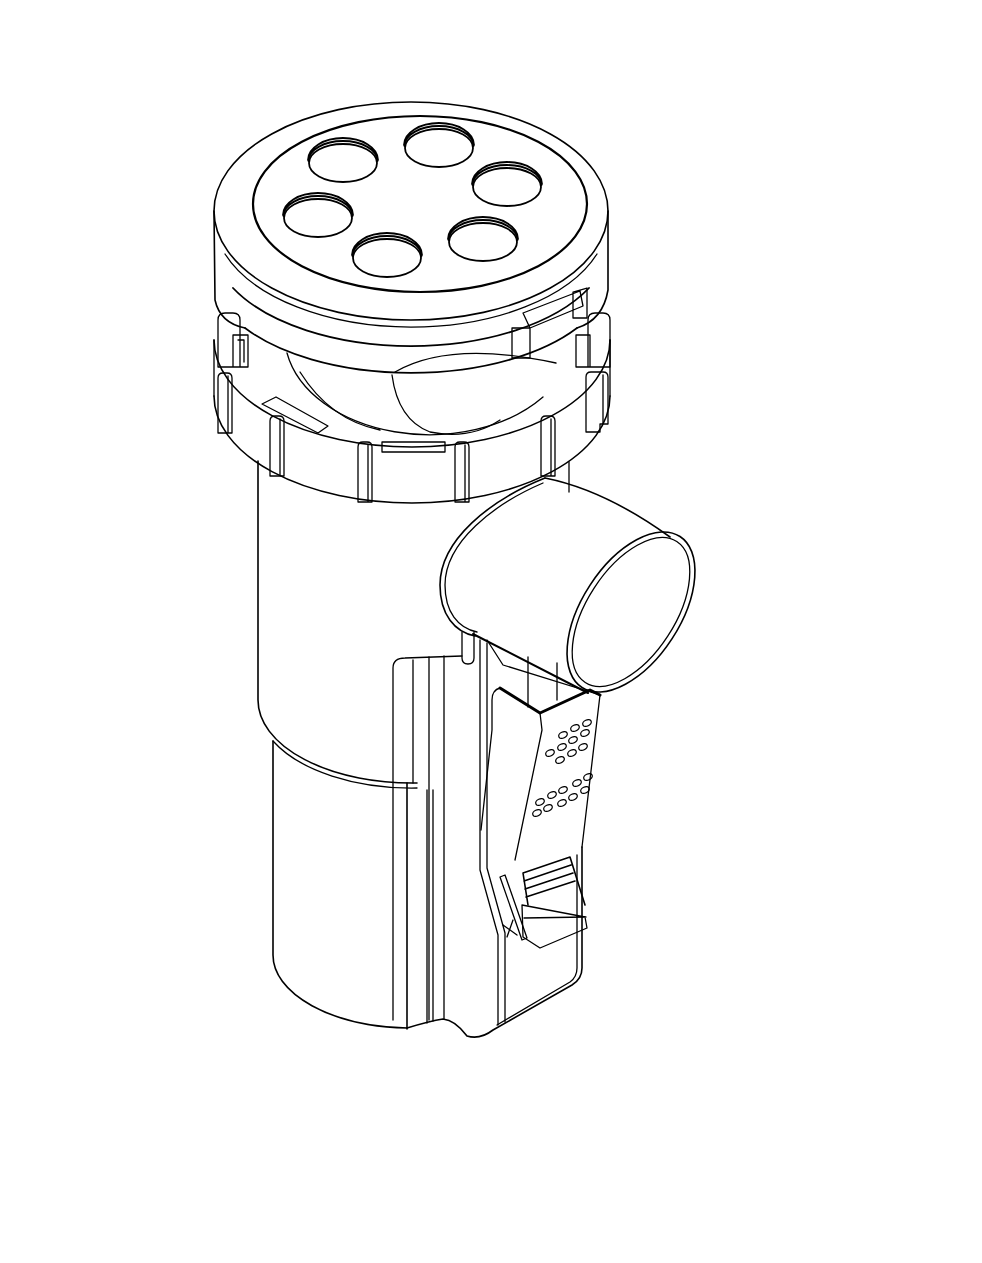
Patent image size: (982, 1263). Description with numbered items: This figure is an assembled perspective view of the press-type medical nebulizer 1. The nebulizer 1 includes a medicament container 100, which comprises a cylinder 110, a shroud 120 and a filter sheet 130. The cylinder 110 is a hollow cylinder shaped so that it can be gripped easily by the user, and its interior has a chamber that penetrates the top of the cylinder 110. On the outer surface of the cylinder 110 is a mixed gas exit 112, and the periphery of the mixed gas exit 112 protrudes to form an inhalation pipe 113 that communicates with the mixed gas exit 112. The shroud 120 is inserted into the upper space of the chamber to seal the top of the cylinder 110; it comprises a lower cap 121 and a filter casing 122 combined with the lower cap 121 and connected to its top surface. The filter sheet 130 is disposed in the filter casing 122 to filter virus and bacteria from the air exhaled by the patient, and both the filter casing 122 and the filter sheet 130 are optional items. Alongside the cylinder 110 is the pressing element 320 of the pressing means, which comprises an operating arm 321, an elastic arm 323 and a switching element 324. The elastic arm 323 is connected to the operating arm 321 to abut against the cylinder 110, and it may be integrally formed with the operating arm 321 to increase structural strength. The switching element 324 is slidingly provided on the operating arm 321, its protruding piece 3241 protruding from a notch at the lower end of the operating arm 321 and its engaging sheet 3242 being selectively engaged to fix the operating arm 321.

The nebulizer 1 is at (677, 41).
The medicament container 100 is at (113, 685).
The cylinder 110 is at (287, 652).
The mixed gas exit 112 is at (663, 592).
The inhalation pipe 113 is at (613, 517).
The shroud 120 is at (252, 432).
The lower cap 121 is at (586, 414).
The filter casing 122 is at (592, 268).
The filter sheet 130 is at (313, 223).
The pressing element 320 is at (600, 831).
The operating arm 321 is at (567, 767).
The elastic arm 323 is at (500, 668).
The switching element 324 is at (580, 943).
The protruding piece 3241 is at (585, 890).
The engaging sheet 3242 is at (501, 944).